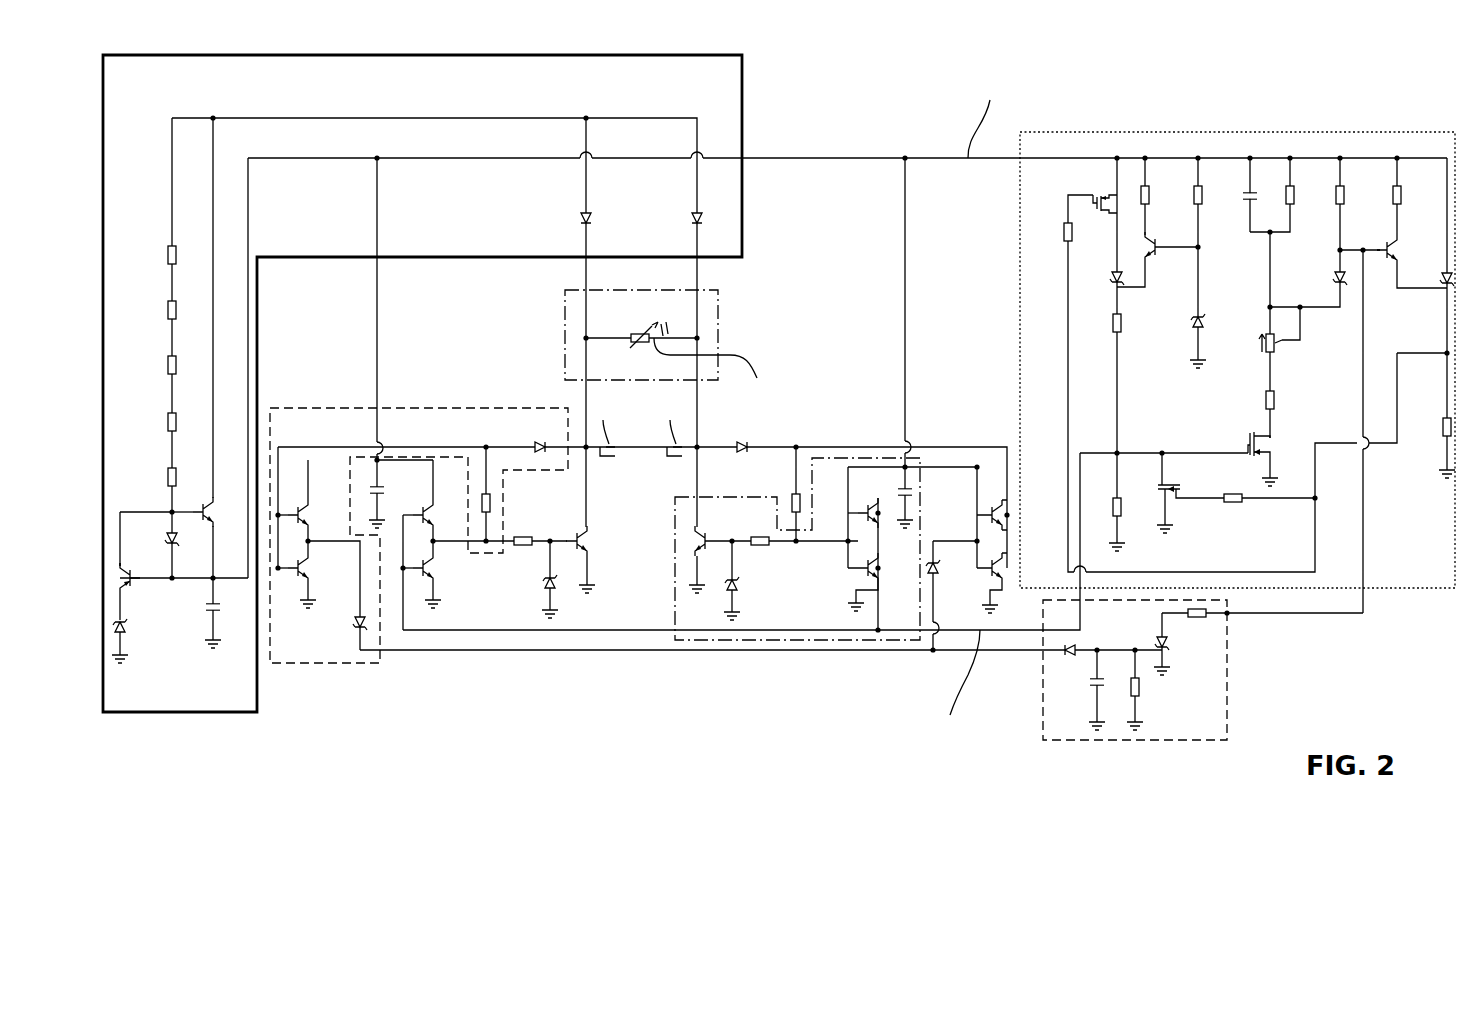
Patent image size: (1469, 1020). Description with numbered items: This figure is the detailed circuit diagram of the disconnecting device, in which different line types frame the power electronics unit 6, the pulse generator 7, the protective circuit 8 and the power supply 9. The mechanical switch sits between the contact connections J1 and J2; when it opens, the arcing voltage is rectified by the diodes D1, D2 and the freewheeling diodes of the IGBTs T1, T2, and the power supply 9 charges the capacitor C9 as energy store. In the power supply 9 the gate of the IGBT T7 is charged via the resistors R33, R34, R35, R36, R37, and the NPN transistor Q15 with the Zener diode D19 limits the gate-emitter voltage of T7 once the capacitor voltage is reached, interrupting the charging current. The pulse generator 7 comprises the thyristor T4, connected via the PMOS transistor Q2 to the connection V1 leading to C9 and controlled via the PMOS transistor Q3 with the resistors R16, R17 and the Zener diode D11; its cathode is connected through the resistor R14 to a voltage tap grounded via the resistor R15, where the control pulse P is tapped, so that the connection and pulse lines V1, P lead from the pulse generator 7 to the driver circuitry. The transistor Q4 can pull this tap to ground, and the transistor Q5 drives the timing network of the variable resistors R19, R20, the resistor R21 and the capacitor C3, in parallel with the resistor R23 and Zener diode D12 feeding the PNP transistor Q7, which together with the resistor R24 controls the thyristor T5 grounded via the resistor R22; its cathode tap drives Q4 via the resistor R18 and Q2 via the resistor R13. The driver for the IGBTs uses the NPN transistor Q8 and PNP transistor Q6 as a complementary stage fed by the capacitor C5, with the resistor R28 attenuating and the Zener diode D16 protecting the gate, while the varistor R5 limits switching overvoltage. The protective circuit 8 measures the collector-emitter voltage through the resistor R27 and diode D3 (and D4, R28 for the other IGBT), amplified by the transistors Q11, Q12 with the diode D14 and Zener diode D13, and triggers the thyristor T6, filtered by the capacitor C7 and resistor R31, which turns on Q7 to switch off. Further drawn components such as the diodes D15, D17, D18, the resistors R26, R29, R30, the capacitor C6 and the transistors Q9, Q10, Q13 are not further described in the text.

The power supply 9 is at (742, 112).
The pulse generator 7 is at (1148, 132).
The protective circuit 8 is at (315, 663).
The power electronics unit 6 is at (810, 640).
The connection V1 is at (988, 114).
The supply voltage / power node V1, P is at (970, 688).
The varistor R5 is at (678, 349).
The diode D1 is at (603, 218).
The diode D2 is at (681, 218).
The diode D3 is at (742, 435).
The diode D4 is at (541, 435).
The Zener diode D11 is at (1219, 339).
The Zener diode D12 is at (1322, 277).
The Zener diode D13 is at (1067, 661).
The diode D14 is at (951, 578).
The zener diode D15 is at (339, 623).
The Zener diode D16 is at (754, 583).
The zener diode D17 is at (531, 582).
The zener diode D18 is at (153, 538).
The Zener diode D19 is at (141, 639).
The resistor R13 is at (1049, 232).
The resistor R14 is at (1097, 323).
The resistor R15 is at (1134, 519).
The resistor R16 is at (1165, 194).
The resistor R17 is at (1218, 194).
The resistor R18 is at (1266, 509).
The variable resistor R19 is at (1310, 194).
The variable resistor R20 is at (1289, 348).
The resistor R21 is at (1292, 400).
The resistor R22 is at (1429, 446).
The resistor R23 is at (1360, 194).
The resistor R24 is at (1417, 194).
The resistor R26 is at (1198, 627).
The resistor R27 is at (778, 491).
The resistor R28 is at (756, 529).
The resistor R29 is at (526, 527).
The resistor R30 is at (511, 497).
The resistor R31 is at (1153, 690).
The resistor R33 is at (149, 255).
The resistor R34 is at (149, 310).
The resistor R35 is at (149, 365).
The resistor R36 is at (149, 422).
The resistor R37 is at (149, 477).
The capacitor C3 is at (1261, 182).
The capacitor C5 is at (892, 497).
The capacitor C6 is at (392, 494).
The capacitor C7 is at (1107, 690).
The capacitor C9 is at (227, 613).
The PMOS transistor Q2 is at (1099, 190).
The PMOS transistor Q3 is at (1157, 253).
The transistor Q4 is at (1190, 505).
The transistor Q5 is at (1246, 457).
The PNP transistor Q6 is at (850, 582).
The PNP transistor Q7 is at (1401, 246).
The NPN transistor Q8 is at (850, 513).
The transistor Q9 is at (432, 515).
The transistor Q10 is at (438, 568).
The transistor Q11 is at (642, 583).
The transistor Q12 is at (971, 515).
The transistor Q13 is at (312, 515).
The NPN transistor Q15 is at (147, 591).
The IGBT T1 is at (593, 559).
The IGBT T2 is at (679, 541).
The thyristor T4 is at (1104, 276).
The thyristor T5 is at (1433, 276).
The thyristor T6 is at (1149, 639).
The IGBT T7 is at (209, 512).
The contact connection J1 is at (605, 424).
The contact connection J2 is at (672, 424).